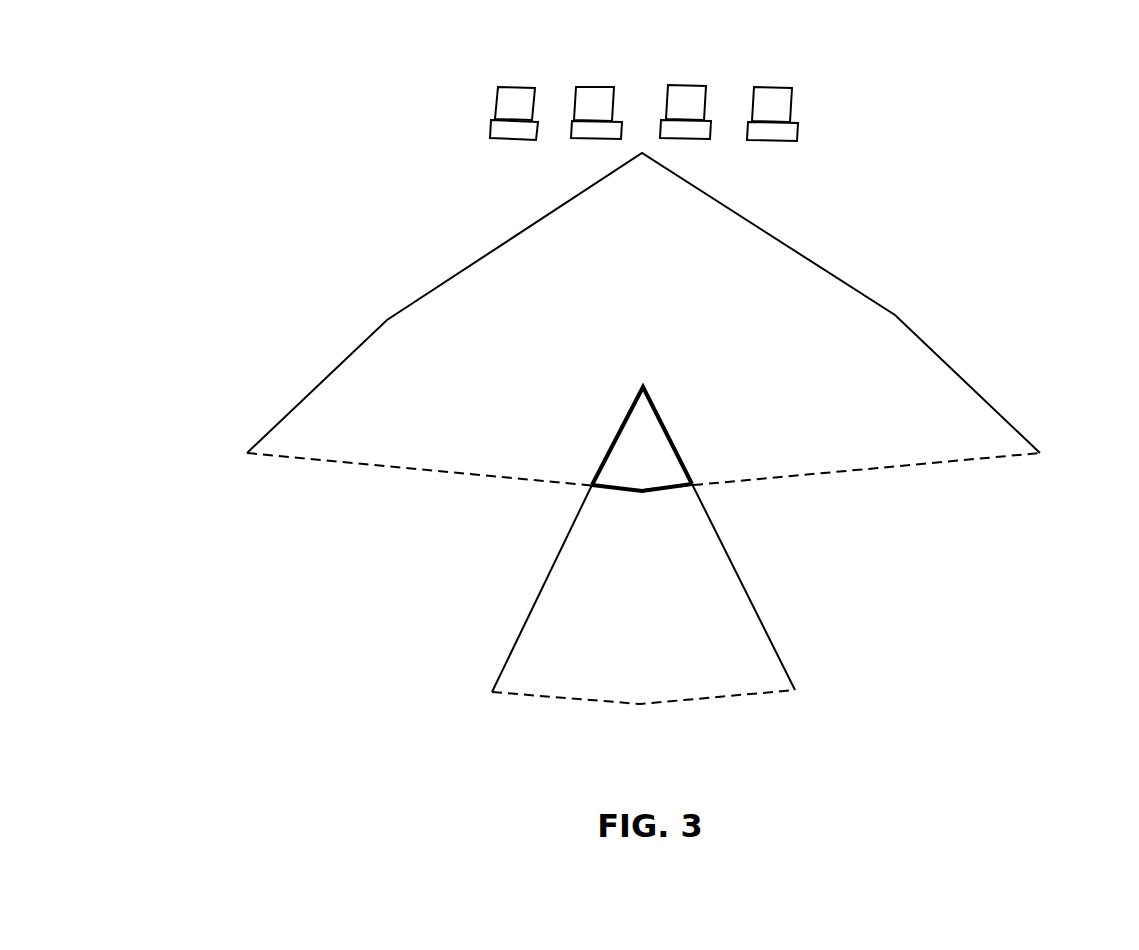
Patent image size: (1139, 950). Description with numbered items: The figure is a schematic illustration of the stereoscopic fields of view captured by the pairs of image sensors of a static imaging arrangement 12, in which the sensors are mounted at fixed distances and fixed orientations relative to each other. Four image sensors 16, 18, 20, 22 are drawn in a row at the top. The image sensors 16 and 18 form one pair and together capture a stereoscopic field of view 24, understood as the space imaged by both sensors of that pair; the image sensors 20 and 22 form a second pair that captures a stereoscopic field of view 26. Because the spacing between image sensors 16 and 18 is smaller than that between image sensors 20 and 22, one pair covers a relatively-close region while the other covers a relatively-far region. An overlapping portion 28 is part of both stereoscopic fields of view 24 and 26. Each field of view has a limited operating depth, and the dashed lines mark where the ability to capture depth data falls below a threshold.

The static imaging arrangement 12 is at (426, 79).
The image sensor 16 is at (594, 86).
The image sensor 18 is at (687, 85).
The image sensor 20 is at (513, 86).
The image sensor 22 is at (771, 87).
The stereoscopic field of view 24 is at (952, 368).
The stereoscopic field of view 26 is at (718, 698).
The overlapping portion 28 is at (670, 435).